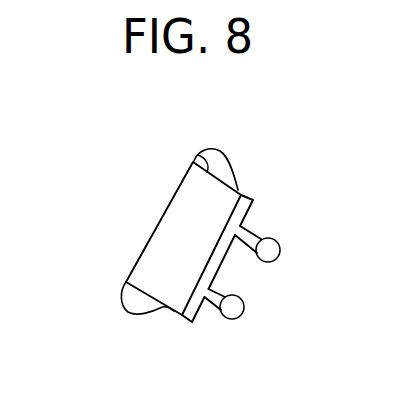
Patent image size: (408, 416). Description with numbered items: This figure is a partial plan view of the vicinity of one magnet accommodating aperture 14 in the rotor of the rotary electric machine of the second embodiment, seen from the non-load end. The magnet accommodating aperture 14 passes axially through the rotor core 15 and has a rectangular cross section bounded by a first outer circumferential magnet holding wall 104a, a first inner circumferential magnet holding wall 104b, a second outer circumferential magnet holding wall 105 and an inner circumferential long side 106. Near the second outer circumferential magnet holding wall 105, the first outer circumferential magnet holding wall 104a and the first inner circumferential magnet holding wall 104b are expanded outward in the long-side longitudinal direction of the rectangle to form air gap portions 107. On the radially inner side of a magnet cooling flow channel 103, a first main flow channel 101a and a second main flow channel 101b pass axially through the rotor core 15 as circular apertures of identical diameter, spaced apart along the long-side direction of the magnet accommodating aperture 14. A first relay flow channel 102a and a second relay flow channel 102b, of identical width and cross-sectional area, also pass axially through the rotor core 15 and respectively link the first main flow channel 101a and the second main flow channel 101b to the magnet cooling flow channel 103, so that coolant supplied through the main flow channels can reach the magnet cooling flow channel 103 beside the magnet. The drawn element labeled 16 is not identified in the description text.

The magnet accommodating aperture 14 is at (194, 160).
The rotor core 15 is at (150, 180).
The side surface of component 16 is at (180, 255).
The first main flow channel 101a is at (264, 247).
The second main flow channel 101b is at (228, 303).
The first relay flow channel 102a is at (257, 253).
The second relay flow channel 102b is at (204, 298).
The magnet cooling flow channel 103 is at (191, 310).
The first outer circumferential magnet holding wall 104a is at (240, 190).
The first inner circumferential magnet holding wall 104b is at (165, 312).
The second outer circumferential magnet holding wall 105 is at (130, 275).
The inner circumferential long side 106 is at (250, 212).
The air gap portion 107 is at (138, 291).